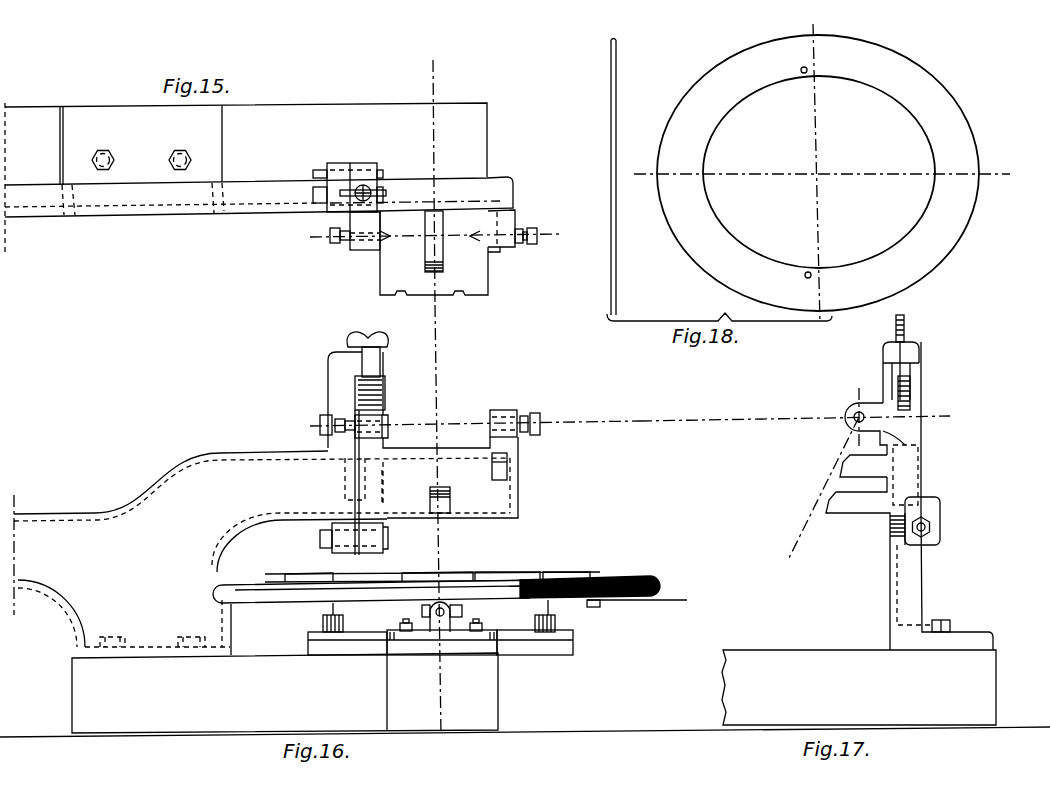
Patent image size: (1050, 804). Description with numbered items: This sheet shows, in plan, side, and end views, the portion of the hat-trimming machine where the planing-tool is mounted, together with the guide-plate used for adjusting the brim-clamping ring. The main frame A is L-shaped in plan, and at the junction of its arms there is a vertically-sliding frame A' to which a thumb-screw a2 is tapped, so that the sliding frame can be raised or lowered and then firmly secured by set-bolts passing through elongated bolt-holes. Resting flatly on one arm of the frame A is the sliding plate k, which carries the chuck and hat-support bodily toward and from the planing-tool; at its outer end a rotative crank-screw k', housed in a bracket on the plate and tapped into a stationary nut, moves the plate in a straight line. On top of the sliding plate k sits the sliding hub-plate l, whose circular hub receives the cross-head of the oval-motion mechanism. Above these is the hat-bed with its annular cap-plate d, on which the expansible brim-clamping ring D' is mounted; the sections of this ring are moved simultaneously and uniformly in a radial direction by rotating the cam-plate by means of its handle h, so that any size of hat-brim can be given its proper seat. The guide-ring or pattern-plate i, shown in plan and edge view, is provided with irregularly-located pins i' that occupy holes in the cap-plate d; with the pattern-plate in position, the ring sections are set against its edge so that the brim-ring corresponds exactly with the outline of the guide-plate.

In FIG. 15, the frame A is at (271, 199).
In FIG. 16, the frame A is at (262, 592).
In FIG. 17, the frame A is at (859, 687).
In FIG. 15, the vertically-sliding frame A' is at (413, 206).
In FIG. 16, the vertically-sliding frame A' is at (430, 453).
In FIG. 17, the vertically-sliding frame A' is at (909, 496).
In FIG. 15, the thumb-screw a2 is at (366, 190).
In FIG. 16, the thumb-screw a2 is at (374, 361).
In FIG. 17, the thumb-screw a2 is at (912, 357).
In FIG. 18, the guide-ring or pattern-plate i is at (787, 173).
In FIG. 18, the pins i' is at (711, 180).
In FIG. 16, the cap-plate d is at (380, 591).
In FIG. 16, the expansible brim-clamping ring D' is at (432, 568).
In FIG. 16, the handle h is at (690, 600).
In FIG. 16, the sliding plate k is at (447, 637).
In FIG. 16, the rotative crank-screw k' is at (454, 617).
In FIG. 16, the sliding hub-plate l is at (445, 619).